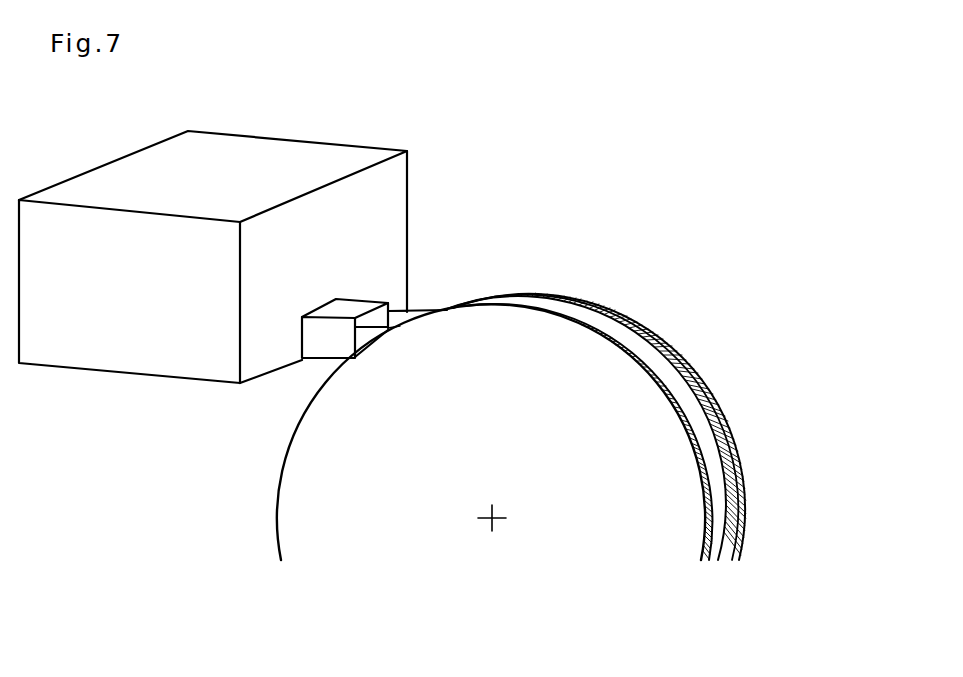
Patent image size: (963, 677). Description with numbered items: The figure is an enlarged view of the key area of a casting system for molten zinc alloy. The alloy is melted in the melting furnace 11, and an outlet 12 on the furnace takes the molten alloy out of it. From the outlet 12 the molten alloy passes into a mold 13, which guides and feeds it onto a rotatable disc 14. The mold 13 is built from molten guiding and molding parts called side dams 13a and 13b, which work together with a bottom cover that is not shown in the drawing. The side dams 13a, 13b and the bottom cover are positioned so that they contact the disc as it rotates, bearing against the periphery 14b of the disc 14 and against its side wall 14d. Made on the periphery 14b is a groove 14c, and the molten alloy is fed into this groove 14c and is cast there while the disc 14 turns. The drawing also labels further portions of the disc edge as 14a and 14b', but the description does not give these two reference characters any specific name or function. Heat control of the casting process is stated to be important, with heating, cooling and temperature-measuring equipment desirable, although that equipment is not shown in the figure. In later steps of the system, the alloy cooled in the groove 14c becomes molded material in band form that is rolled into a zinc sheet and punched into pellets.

The melting furnace 11 is at (392, 227).
The outlet 12 is at (322, 345).
The mold 13 is at (367, 337).
The side dam 13a is at (372, 320).
The side dam 13b is at (413, 307).
The rotatable disc 14 is at (577, 367).
The inner layer 14a is at (665, 338).
The periphery 14b is at (640, 428).
The second layer portion 14b' is at (698, 424).
The groove 14c is at (737, 455).
The side wall 14d is at (743, 495).